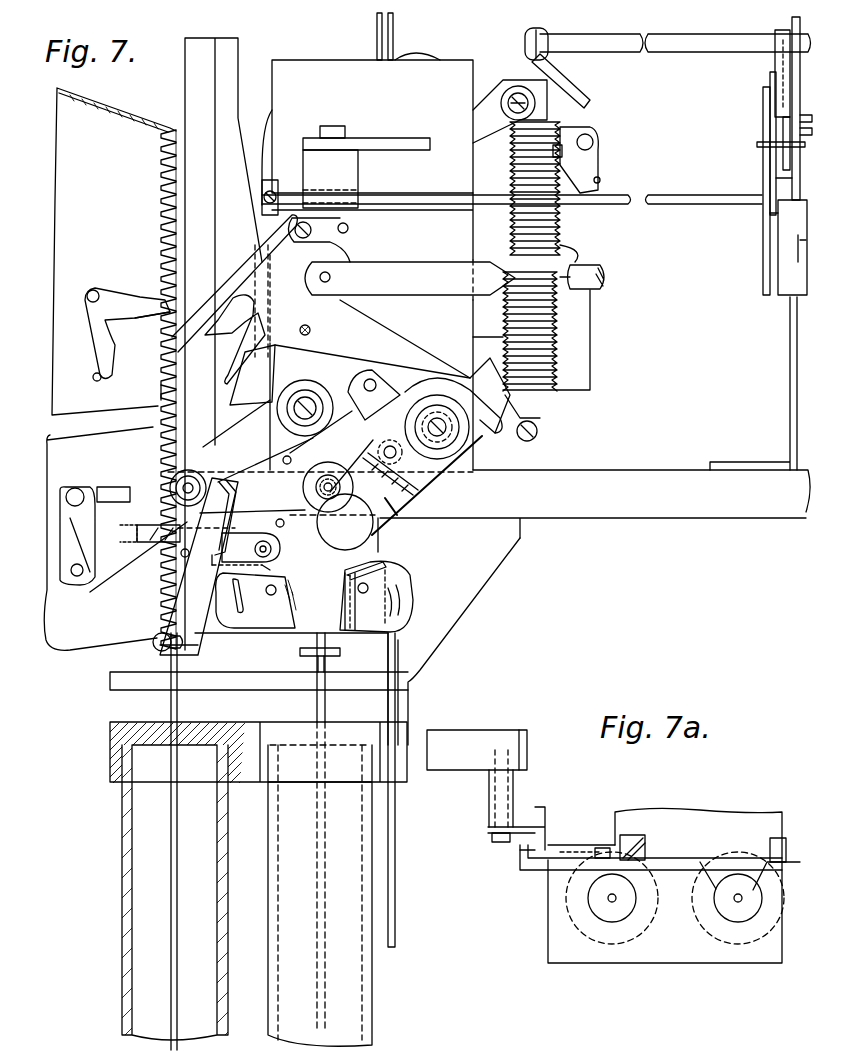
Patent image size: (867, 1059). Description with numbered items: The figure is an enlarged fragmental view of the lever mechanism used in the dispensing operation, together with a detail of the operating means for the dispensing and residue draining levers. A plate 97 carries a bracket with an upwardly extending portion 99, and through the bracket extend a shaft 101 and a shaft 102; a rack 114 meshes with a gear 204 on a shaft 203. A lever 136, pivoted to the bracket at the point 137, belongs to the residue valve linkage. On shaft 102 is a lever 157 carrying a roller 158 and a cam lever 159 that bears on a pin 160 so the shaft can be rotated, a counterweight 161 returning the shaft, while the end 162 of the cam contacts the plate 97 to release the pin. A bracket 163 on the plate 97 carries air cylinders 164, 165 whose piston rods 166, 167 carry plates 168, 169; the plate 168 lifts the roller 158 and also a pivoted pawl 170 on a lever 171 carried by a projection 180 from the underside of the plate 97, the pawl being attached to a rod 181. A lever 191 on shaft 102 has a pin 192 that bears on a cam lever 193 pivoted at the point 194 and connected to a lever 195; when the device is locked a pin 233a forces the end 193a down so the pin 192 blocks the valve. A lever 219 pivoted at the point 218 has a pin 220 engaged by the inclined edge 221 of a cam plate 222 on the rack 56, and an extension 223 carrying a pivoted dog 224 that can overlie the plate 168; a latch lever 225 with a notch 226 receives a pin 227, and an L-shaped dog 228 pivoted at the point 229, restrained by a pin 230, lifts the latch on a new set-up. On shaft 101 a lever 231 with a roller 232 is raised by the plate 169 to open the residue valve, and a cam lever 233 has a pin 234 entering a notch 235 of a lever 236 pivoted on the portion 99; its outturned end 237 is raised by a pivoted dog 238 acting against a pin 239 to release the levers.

In FIG. 7, the rack 56 is at (85, 126).
In FIG. 7A, the rack 56 is at (505, 737).
In FIG. 7, the plate 97 is at (718, 497).
In FIG. 7, the upwardly extending portion of bracket 99 is at (422, 75).
In FIG. 7, the shaft 101 is at (310, 398).
In FIG. 7, the shaft 102 is at (472, 486).
In FIG. 7, the rack 114 is at (580, 352).
In FIG. 7, the lever 136 is at (540, 405).
In FIG. 7, the pivot point 137 is at (548, 422).
In FIG. 7, the lever 157 is at (309, 462).
In FIG. 7, the roller 158 is at (304, 493).
In FIG. 7, the cam lever 159 is at (410, 393).
In FIG. 7, the pin 160 is at (466, 445).
In FIG. 7, the counterweight 161 is at (402, 506).
In FIG. 7, the end of cam 162 is at (540, 438).
In FIG. 7, the bracket 163 is at (462, 624).
In FIG. 7, the air cylinder 164 is at (372, 996).
In FIG. 7A, the air cylinder 164 is at (765, 942).
In FIG. 7, the air cylinder 165 is at (121, 912).
In FIG. 7A, the air cylinder 165 is at (625, 942).
In FIG. 7, the piston rod 166 is at (316, 712).
In FIG. 7, the piston rod 167 is at (178, 712).
In FIG. 7, the plate 168 is at (340, 652).
In FIG. 7A, the plate 168 is at (742, 918).
In FIG. 7, the plate 169 is at (153, 646).
In FIG. 7A, the plate 169 is at (600, 915).
In FIG. 7, the pivoted pawl 170 is at (410, 580).
In FIG. 7A, the pivoted pawl 170 is at (778, 882).
In FIG. 7, the lever 171 is at (380, 560).
In FIG. 7, the projection 180 is at (333, 592).
In FIG. 7, the rod 181 is at (394, 872).
In FIG. 7, the lever 191 is at (364, 384).
In FIG. 7, the pin 192 is at (378, 370).
In FIG. 7, the cam lever 193 is at (360, 335).
In FIG. 7, the end of cam lever 193a is at (448, 362).
In FIG. 7, the pivot point 194 is at (301, 321).
In FIG. 7, the lever 195 is at (410, 277).
In FIG. 7, the shaft 203 is at (610, 280).
In FIG. 7, the gear 204 is at (567, 247).
In FIG. 7, the pivot point 218 is at (241, 516).
In FIG. 7A, the pivot point 218 is at (640, 855).
In FIG. 7, the lever 219 is at (172, 590).
In FIG. 7A, the lever 219 is at (605, 865).
In FIG. 7, the pin 220 is at (160, 628).
In FIG. 7A, the pin 220 is at (575, 870).
In FIG. 7, the inclined edge 221 is at (117, 557).
In FIG. 7, the cam plate 222 is at (100, 538).
In FIG. 7A, the cam plate 222 is at (528, 873).
In FIG. 7, the extension 223 is at (272, 562).
In FIG. 7A, the extension 223 is at (690, 850).
In FIG. 7, the pivoted dog 224 is at (270, 630).
In FIG. 7A, the pivoted dog 224 is at (740, 905).
In FIG. 7, the latch lever 225 is at (259, 522).
In FIG. 7A, the latch lever 225 is at (568, 850).
In FIG. 7, the notch 226 is at (200, 543).
In FIG. 7, the pin 227 is at (186, 558).
In FIG. 7A, the pin 227 is at (590, 848).
In FIG. 7, the pivoted dog 228 is at (68, 483).
In FIG. 7A, the pivoted dog 228 is at (527, 818).
In FIG. 7, the pivot point 229 is at (113, 506).
In FIG. 7A, the pivot point 229 is at (498, 846).
In FIG. 7, the pin 230 is at (76, 578).
In FIG. 7, the lever 231 is at (215, 460).
In FIG. 7, the roller 232 is at (170, 483).
In FIG. 7, the cam lever 233 is at (187, 445).
In FIG. 7, the pin 233a is at (333, 419).
In FIG. 7, the pin 234 is at (162, 392).
In FIG. 7, the notch 235 is at (240, 290).
In FIG. 7, the lever 236 is at (349, 234).
In FIG. 7, the outturned end 237 is at (144, 330).
In FIG. 7, the pivoted dog 238 is at (95, 290).
In FIG. 7, the pin 239 is at (93, 378).